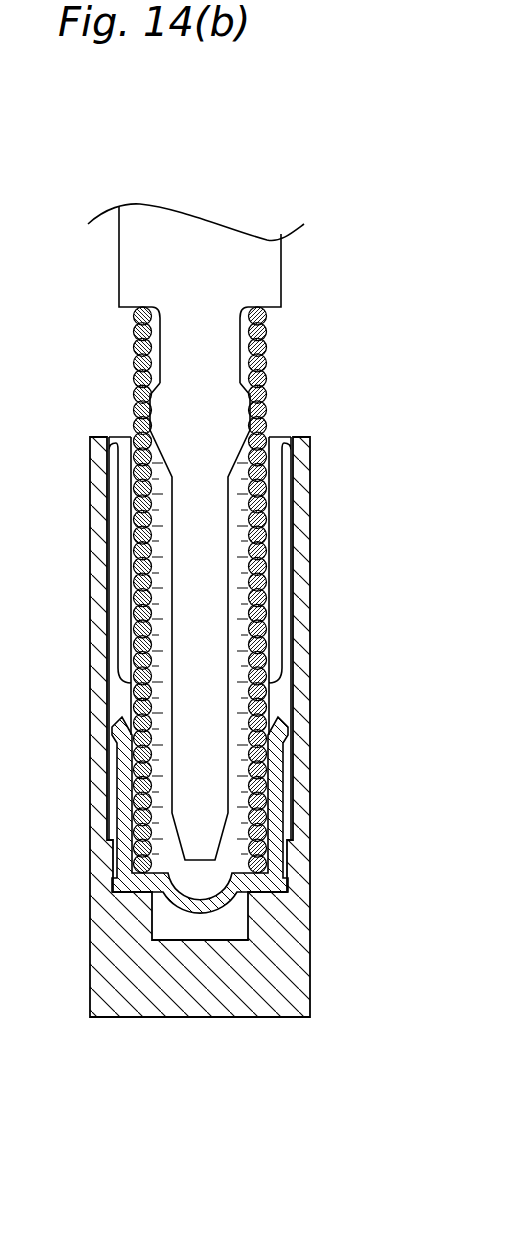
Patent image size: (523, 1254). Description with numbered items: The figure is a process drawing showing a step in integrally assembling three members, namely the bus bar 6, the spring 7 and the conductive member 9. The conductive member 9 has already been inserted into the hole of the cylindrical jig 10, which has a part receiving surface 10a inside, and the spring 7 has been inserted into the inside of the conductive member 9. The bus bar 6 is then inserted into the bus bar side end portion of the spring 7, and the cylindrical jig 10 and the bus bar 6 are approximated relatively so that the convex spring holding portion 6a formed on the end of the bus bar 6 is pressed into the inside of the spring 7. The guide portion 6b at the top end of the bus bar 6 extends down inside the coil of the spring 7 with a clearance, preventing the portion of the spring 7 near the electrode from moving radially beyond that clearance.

The bus bar 6 is at (255, 263).
The spring holding portion 6a is at (163, 412).
The guide portion 6b is at (210, 521).
The spring 7 is at (273, 375).
The conductive member 9 is at (282, 610).
The cylindrical jig 10 is at (202, 980).
The part receiving surface 10a is at (118, 878).